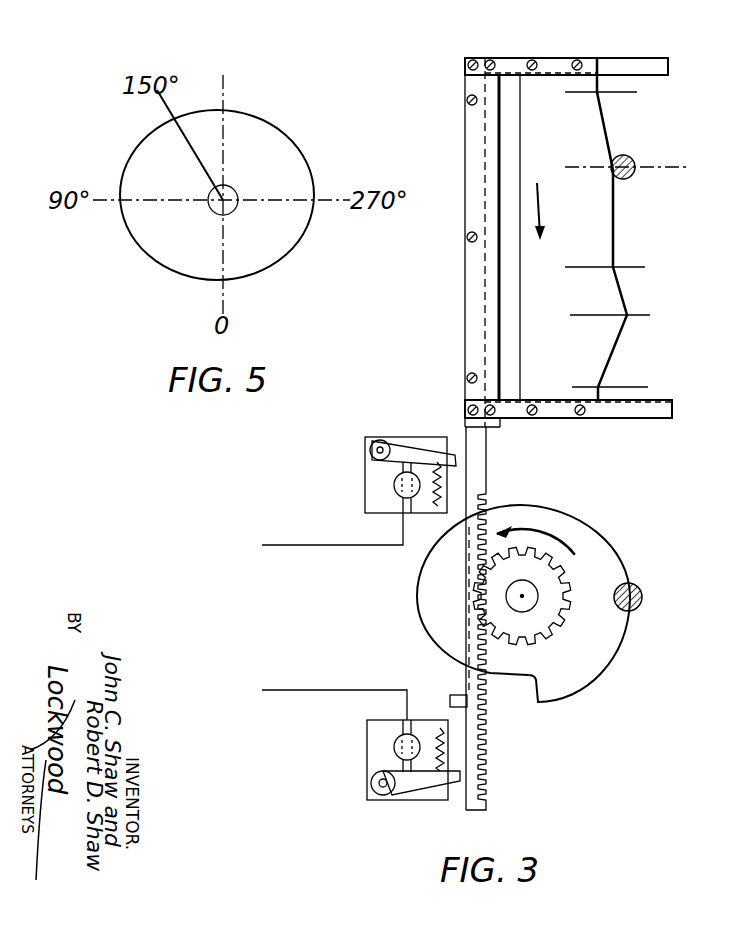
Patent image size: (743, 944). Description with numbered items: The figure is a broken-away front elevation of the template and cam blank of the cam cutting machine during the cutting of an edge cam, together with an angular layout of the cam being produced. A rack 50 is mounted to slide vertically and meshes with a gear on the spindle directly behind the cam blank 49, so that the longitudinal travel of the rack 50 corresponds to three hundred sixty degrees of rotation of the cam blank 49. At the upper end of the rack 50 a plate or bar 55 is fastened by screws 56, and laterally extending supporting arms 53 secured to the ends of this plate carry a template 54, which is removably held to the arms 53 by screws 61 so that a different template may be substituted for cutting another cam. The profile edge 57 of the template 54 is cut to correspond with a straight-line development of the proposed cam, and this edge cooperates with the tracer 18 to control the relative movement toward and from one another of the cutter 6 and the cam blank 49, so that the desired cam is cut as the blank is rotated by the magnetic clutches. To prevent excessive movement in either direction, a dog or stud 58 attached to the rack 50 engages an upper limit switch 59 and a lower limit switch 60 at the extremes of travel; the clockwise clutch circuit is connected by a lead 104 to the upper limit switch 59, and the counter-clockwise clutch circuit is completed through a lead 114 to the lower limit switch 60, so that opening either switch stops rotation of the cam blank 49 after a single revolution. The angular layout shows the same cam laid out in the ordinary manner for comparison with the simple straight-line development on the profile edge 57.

The cutter 6 is at (642, 595).
The tracer 18 is at (633, 157).
The cam blank 49 is at (590, 548).
The rack 50 is at (478, 470).
The supporting arms 53 is at (660, 64).
The template 54 is at (648, 366).
The plate or bar 55 is at (468, 312).
The screws 56 is at (467, 106).
The profile edge 57 is at (613, 232).
The dog or stud 58 is at (450, 698).
The upper limit switch 59 is at (415, 457).
The lower limit switch 60 is at (420, 777).
The screws 61 is at (583, 416).
The lead 104 is at (320, 548).
The lead 114 is at (318, 692).